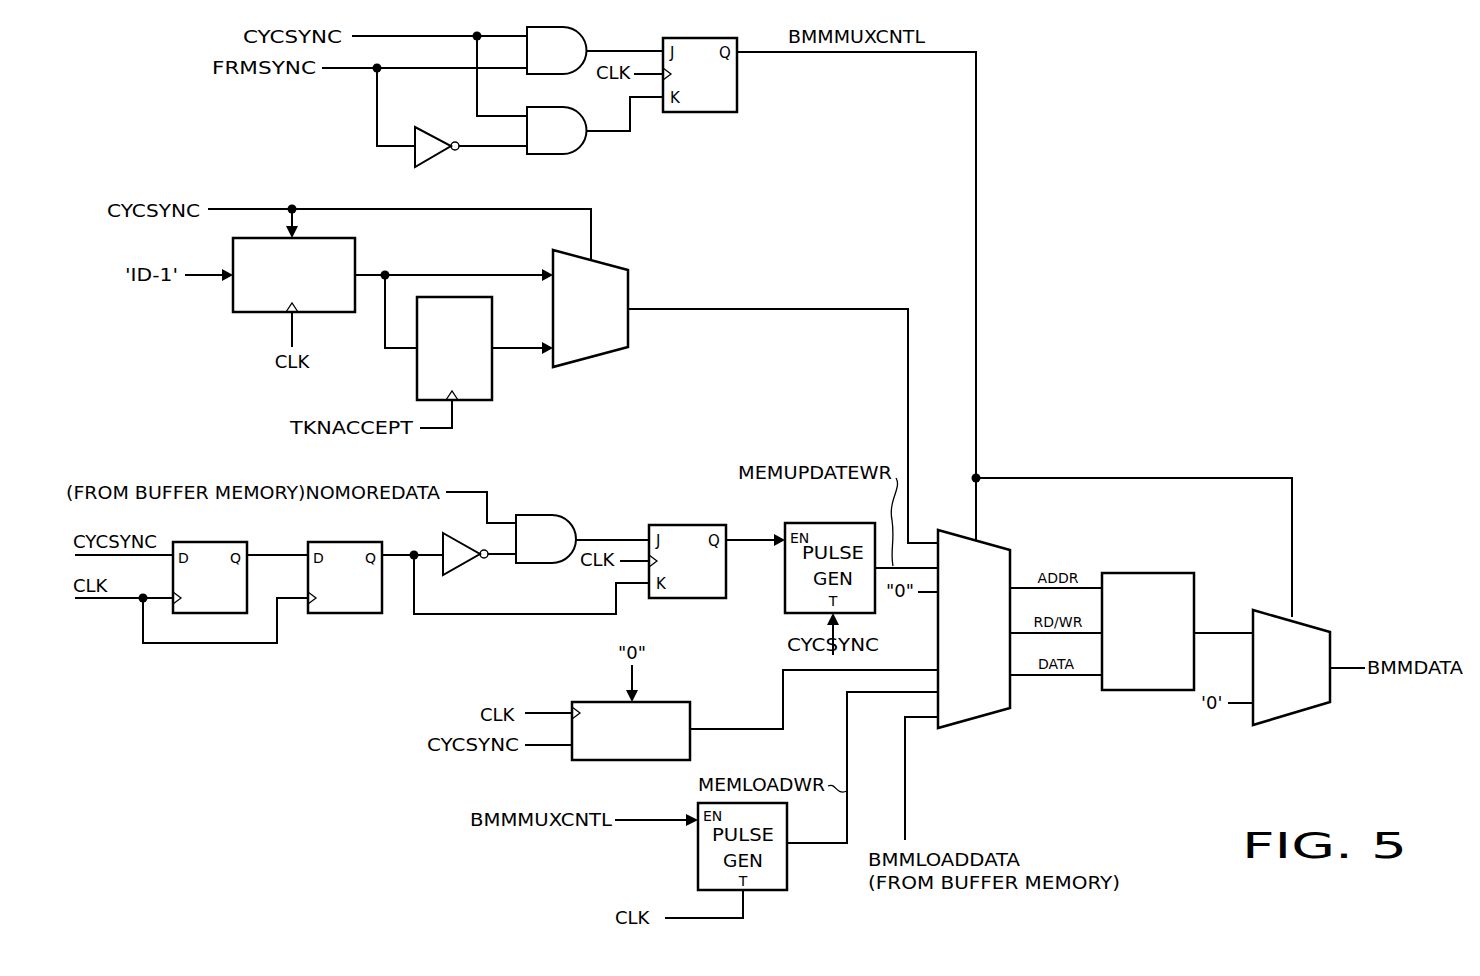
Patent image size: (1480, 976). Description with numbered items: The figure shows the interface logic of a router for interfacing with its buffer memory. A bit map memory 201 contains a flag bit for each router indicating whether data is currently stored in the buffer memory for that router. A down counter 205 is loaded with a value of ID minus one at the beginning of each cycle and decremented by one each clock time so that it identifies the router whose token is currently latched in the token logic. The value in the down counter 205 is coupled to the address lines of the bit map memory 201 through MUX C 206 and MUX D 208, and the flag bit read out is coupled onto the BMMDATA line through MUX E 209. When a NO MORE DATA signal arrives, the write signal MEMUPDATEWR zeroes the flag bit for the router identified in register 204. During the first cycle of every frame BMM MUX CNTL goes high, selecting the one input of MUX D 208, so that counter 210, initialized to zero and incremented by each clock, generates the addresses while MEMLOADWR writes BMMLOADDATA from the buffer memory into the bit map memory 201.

The bit map memory 201 is at (1145, 573).
The register 204 is at (494, 390).
The down counter 205 is at (246, 312).
The MUX C 206 is at (630, 291).
The MUX D 208 is at (990, 541).
The MUX E 209 is at (1308, 621).
The counter 210 is at (665, 702).